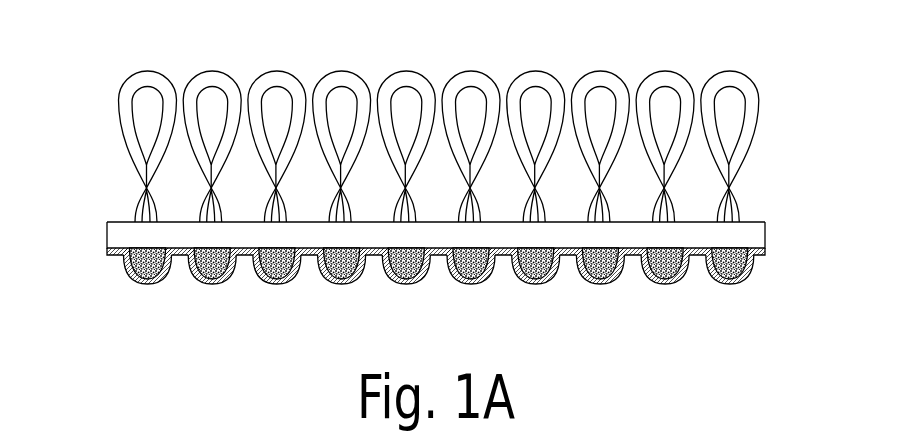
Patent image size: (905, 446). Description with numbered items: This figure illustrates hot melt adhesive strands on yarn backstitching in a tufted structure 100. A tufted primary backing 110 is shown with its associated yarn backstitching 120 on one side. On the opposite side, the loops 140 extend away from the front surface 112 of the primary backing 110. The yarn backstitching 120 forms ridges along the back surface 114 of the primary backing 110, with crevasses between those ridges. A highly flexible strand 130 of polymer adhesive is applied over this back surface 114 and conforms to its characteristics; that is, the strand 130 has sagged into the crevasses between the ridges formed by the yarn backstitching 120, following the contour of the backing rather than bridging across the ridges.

The fastening article 100 is at (769, 64).
The primary backing 110 is at (113, 236).
The front surface 112 is at (123, 221).
The back surface 114 is at (110, 257).
The backstitching 120 is at (277, 283).
The strand 130 is at (403, 284).
The loops 140 is at (210, 80).